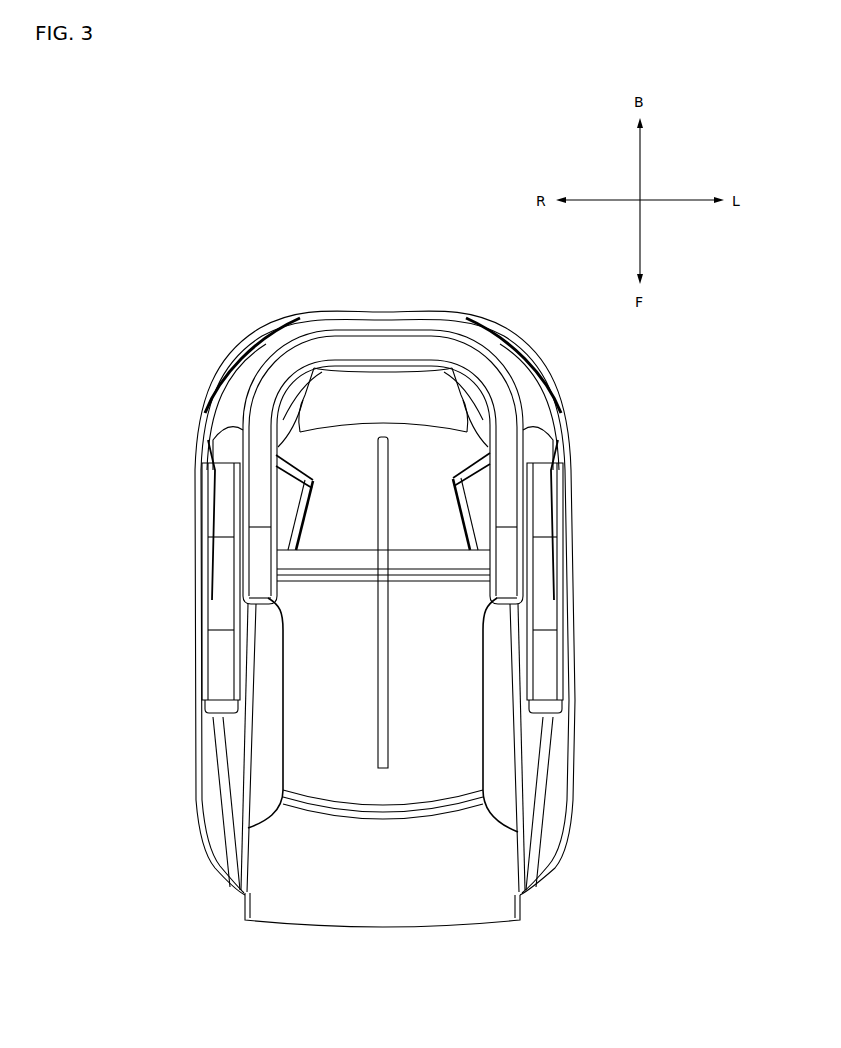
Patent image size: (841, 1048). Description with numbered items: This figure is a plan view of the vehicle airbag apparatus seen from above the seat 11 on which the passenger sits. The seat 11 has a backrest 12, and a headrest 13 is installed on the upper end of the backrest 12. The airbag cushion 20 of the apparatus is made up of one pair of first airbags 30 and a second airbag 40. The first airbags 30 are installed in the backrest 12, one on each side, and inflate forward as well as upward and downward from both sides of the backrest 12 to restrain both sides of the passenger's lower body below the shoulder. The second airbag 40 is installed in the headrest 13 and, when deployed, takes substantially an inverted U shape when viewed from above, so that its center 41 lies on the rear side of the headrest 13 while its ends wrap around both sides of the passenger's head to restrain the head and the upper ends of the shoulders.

The seat 11 is at (433, 853).
The backrest 12 is at (430, 487).
The headrest 13 is at (355, 390).
The airbag cushion 20 is at (68, 466).
The first airbags 30 is at (196, 646).
The second airbag 40 is at (207, 440).
The center 41 is at (420, 350).